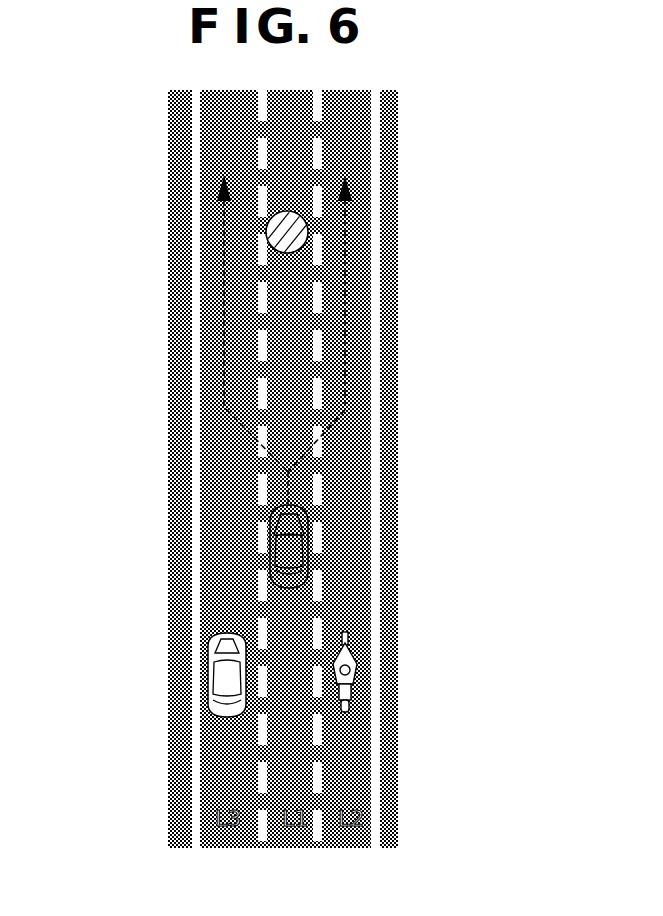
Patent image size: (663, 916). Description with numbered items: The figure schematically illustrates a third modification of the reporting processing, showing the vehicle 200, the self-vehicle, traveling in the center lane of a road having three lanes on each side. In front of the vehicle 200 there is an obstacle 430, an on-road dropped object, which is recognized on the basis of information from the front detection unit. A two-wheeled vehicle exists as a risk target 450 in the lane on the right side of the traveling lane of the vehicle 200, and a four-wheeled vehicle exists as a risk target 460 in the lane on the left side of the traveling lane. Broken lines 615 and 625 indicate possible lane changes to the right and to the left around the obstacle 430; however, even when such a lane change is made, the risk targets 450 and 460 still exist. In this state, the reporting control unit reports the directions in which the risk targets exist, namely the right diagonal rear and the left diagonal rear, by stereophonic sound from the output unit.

The vehicle 200 is at (276, 553).
The obstacle 430 is at (287, 211).
The risk target 450 is at (356, 672).
The risk target 460 is at (224, 681).
The broken line 615 is at (345, 375).
The broken line 625 is at (222, 376).